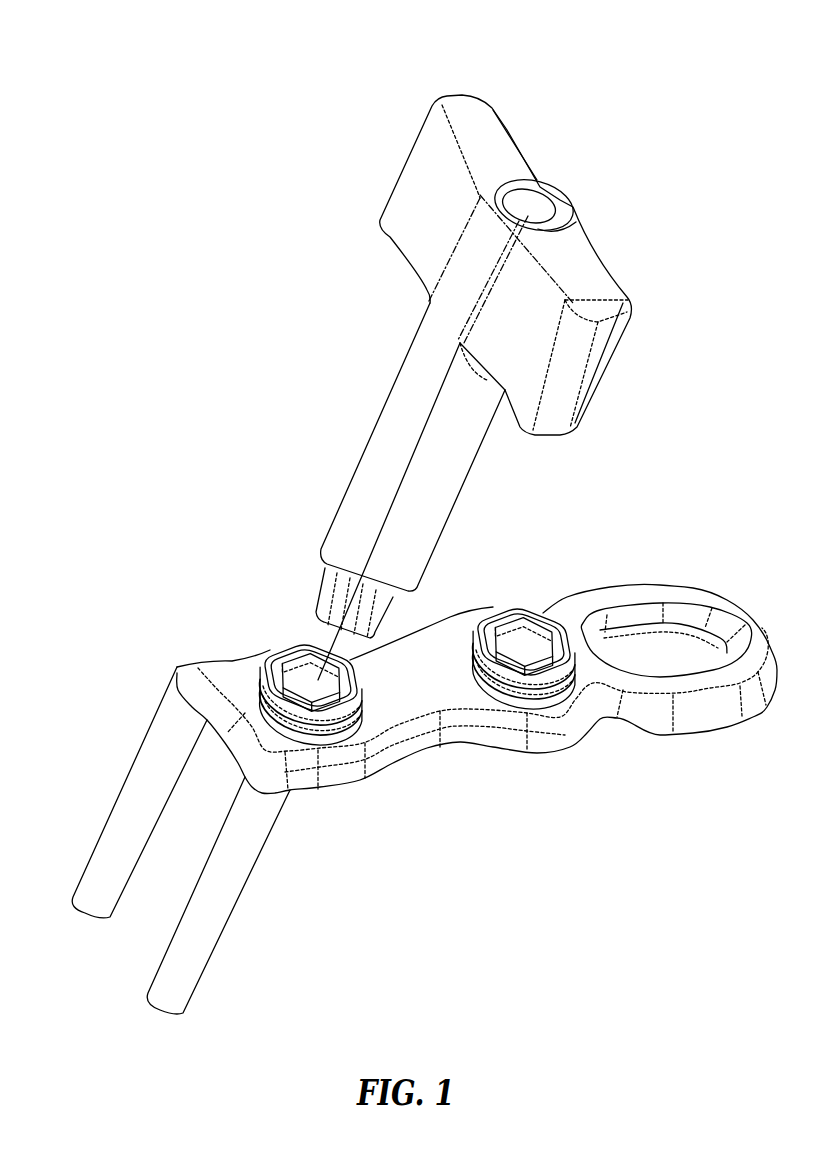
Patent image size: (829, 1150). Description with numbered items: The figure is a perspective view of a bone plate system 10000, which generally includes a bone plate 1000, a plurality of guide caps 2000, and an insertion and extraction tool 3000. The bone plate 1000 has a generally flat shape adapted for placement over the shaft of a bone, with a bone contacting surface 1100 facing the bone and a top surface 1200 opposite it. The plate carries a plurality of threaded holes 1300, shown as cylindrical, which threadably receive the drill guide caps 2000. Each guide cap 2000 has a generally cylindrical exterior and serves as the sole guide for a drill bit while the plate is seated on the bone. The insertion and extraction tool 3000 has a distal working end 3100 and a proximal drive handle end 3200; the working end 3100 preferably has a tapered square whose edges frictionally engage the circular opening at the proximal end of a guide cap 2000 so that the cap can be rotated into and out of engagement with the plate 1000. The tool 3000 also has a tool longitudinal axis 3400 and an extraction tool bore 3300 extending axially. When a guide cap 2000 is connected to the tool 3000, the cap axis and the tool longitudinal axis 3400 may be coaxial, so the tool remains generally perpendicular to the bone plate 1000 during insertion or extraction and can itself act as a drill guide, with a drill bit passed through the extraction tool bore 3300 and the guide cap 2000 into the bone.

The bone plate system 10000 is at (112, 81).
The bone plate 1000 is at (440, 712).
The bone contacting surface 1100 is at (357, 767).
The top surface 1200 is at (453, 617).
The threaded holes 1300 is at (175, 667).
The guide cap 2000 is at (273, 657).
The insertion and extraction tool 3000 is at (405, 383).
The distal working end 3100 is at (313, 598).
The proximal drive handle end 3200 is at (488, 137).
The extraction tool bore 3300 is at (543, 222).
The tool longitudinal axis 3400 is at (527, 183).